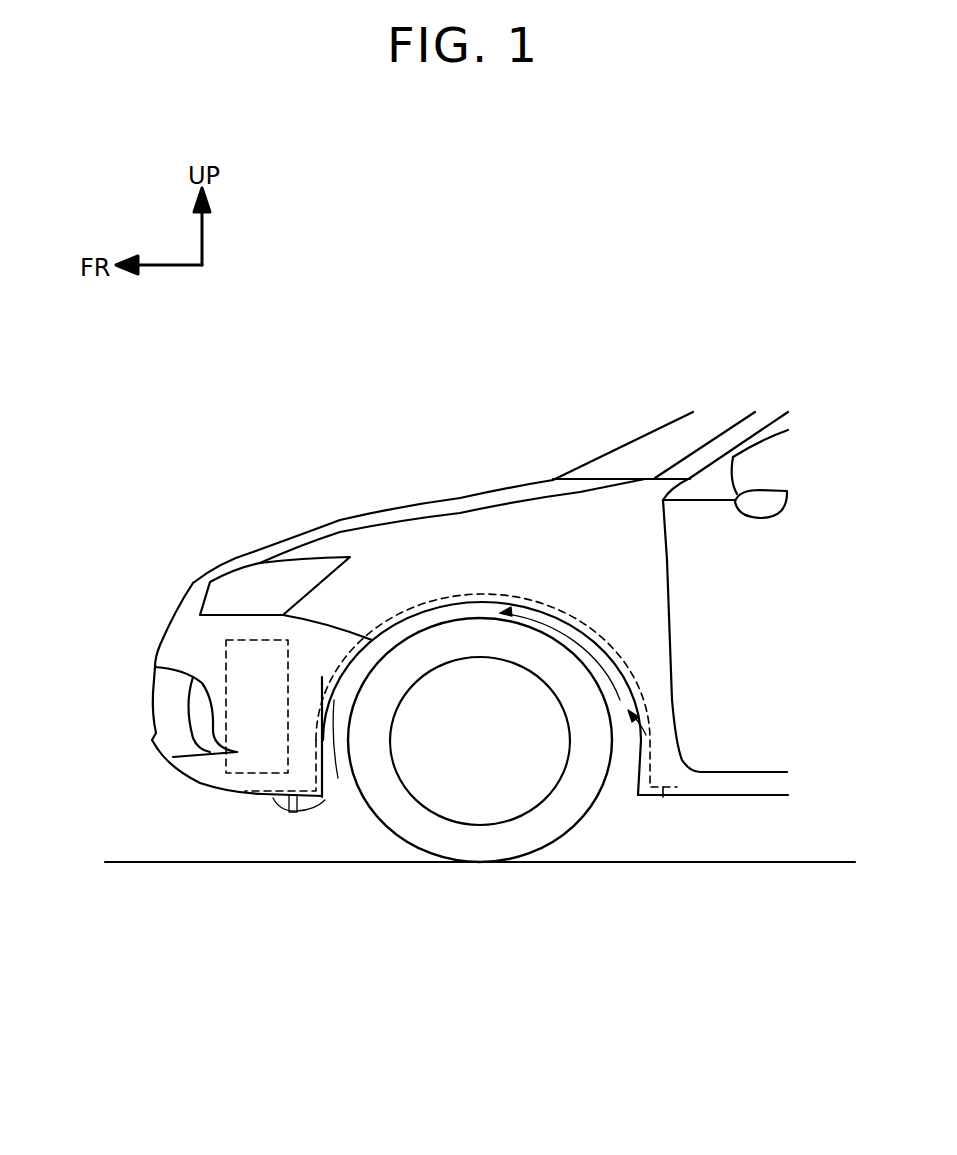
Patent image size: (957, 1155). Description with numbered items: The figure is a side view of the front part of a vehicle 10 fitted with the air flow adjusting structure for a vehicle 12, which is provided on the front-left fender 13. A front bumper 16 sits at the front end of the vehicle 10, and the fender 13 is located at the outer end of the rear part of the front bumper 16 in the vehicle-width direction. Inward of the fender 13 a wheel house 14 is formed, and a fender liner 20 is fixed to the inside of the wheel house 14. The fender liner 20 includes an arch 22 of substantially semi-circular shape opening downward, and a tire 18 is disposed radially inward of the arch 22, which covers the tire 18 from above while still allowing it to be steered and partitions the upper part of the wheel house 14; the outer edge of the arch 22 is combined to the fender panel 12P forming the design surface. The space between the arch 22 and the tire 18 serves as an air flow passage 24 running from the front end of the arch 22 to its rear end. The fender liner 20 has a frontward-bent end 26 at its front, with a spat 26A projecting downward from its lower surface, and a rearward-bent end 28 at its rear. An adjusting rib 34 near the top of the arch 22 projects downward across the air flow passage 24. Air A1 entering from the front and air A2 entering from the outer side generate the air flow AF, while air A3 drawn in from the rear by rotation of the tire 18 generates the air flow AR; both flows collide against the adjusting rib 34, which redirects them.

The vehicle 10 is at (347, 290).
The air flow adjusting structure for a vehicle 12 is at (390, 900).
The fender panel 12P is at (428, 537).
The fender 13 is at (375, 545).
The wheel house 14 is at (530, 606).
The front bumper 16 is at (215, 762).
The tire 18 is at (430, 852).
The fender liner 20 is at (480, 596).
The arch 22 is at (577, 625).
The air flow passage 24 is at (645, 735).
The frontward-bent end 26 is at (303, 793).
The spat 26A is at (286, 797).
The rearward-bent end 28 is at (663, 797).
The adjusting rib 34 is at (446, 598).
The air flow AF is at (383, 641).
The air flow AR is at (587, 653).
The air A1 is at (334, 793).
The air A2 is at (335, 696).
The air A3 is at (622, 787).